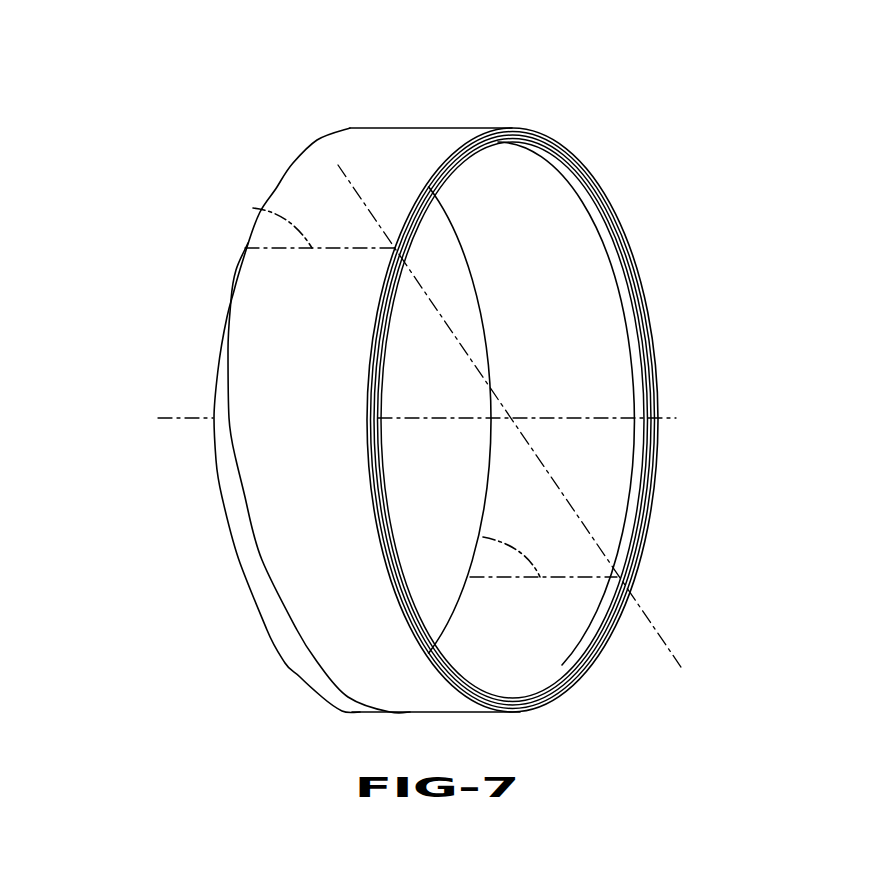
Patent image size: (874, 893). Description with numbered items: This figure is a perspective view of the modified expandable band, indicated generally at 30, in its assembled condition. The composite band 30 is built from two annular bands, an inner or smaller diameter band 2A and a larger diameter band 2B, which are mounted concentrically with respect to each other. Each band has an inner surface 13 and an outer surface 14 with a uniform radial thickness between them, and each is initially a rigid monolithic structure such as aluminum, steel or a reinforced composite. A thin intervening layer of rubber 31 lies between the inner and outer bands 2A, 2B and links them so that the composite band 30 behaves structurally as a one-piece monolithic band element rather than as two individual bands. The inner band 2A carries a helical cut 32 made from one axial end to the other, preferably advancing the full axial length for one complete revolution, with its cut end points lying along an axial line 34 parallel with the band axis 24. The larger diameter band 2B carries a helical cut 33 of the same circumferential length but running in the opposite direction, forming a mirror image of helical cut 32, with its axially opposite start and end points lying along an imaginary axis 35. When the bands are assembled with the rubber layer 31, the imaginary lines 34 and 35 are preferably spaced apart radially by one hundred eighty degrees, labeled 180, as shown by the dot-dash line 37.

The composite band 30 is at (362, 107).
The outer surface 14 is at (318, 155).
The larger diameter band 2B is at (283, 187).
The imaginary axis 35 is at (253, 208).
The band axis 24 is at (172, 418).
The radial spacing of imaginary lines 180 is at (659, 622).
The helical cut 32 is at (620, 323).
The inner band 2A is at (508, 477).
The inner surface 13 is at (515, 510).
The axial line 34 is at (483, 537).
The helical cut 33 is at (288, 622).
The intervening layer of rubber 31 is at (540, 697).
The dot-dash line 37 is at (672, 652).